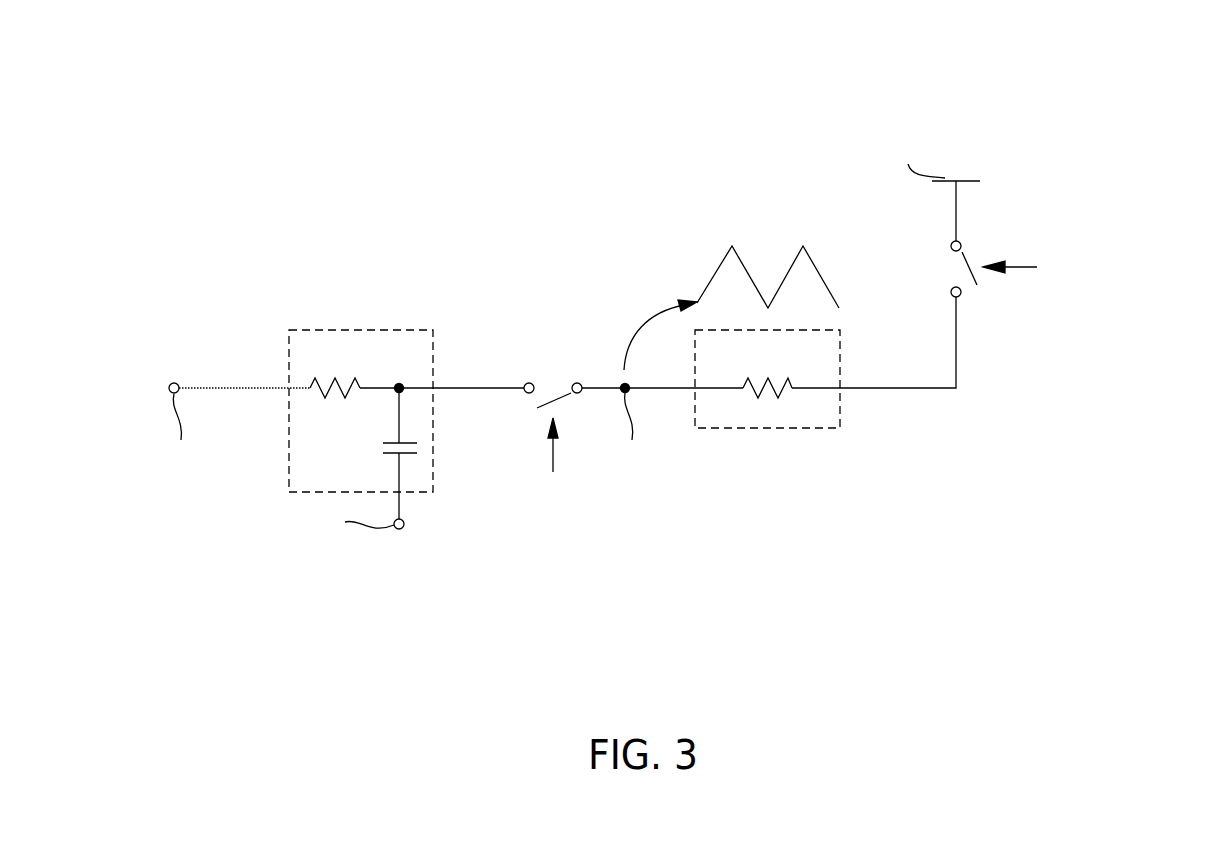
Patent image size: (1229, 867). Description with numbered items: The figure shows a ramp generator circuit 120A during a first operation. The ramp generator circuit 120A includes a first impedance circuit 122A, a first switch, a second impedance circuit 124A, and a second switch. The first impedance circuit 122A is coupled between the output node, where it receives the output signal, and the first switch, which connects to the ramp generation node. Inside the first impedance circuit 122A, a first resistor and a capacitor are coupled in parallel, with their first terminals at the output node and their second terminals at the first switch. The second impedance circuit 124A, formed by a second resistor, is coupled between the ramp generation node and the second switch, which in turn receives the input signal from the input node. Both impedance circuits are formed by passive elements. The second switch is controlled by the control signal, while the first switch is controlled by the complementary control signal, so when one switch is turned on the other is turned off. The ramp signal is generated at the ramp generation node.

The ramp generator circuit 120A is at (1209, 103).
The impedance circuit 122A is at (343, 330).
The impedance circuit 124A is at (750, 428).